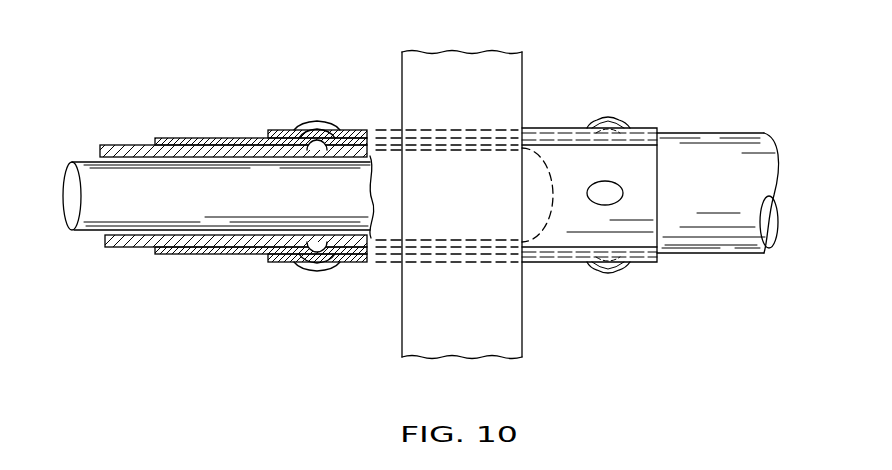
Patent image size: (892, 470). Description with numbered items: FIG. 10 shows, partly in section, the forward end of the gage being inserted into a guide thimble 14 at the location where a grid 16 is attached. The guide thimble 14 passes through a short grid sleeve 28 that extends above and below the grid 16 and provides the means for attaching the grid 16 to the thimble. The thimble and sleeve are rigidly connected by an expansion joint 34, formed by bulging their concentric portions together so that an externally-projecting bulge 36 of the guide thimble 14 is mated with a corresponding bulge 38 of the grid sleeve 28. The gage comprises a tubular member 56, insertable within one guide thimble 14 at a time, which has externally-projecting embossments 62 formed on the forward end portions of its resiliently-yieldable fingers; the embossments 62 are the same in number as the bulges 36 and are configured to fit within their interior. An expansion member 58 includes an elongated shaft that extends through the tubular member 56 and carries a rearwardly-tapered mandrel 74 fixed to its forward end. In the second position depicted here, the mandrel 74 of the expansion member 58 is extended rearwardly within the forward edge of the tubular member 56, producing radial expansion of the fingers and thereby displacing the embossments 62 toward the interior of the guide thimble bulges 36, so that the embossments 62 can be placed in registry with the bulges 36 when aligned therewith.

The guide thimble 14 is at (730, 253).
The grid 16 is at (525, 68).
The grid sleeve 28 is at (554, 265).
The expansion joint 34 is at (594, 167).
The guide thimble bulge 36 is at (318, 122).
The grid sleeve bulge 38 is at (308, 122).
The tubular member 56 is at (120, 143).
The expansion member 58 is at (92, 237).
The embossment 62 is at (328, 132).
The mandrel 74 is at (557, 142).